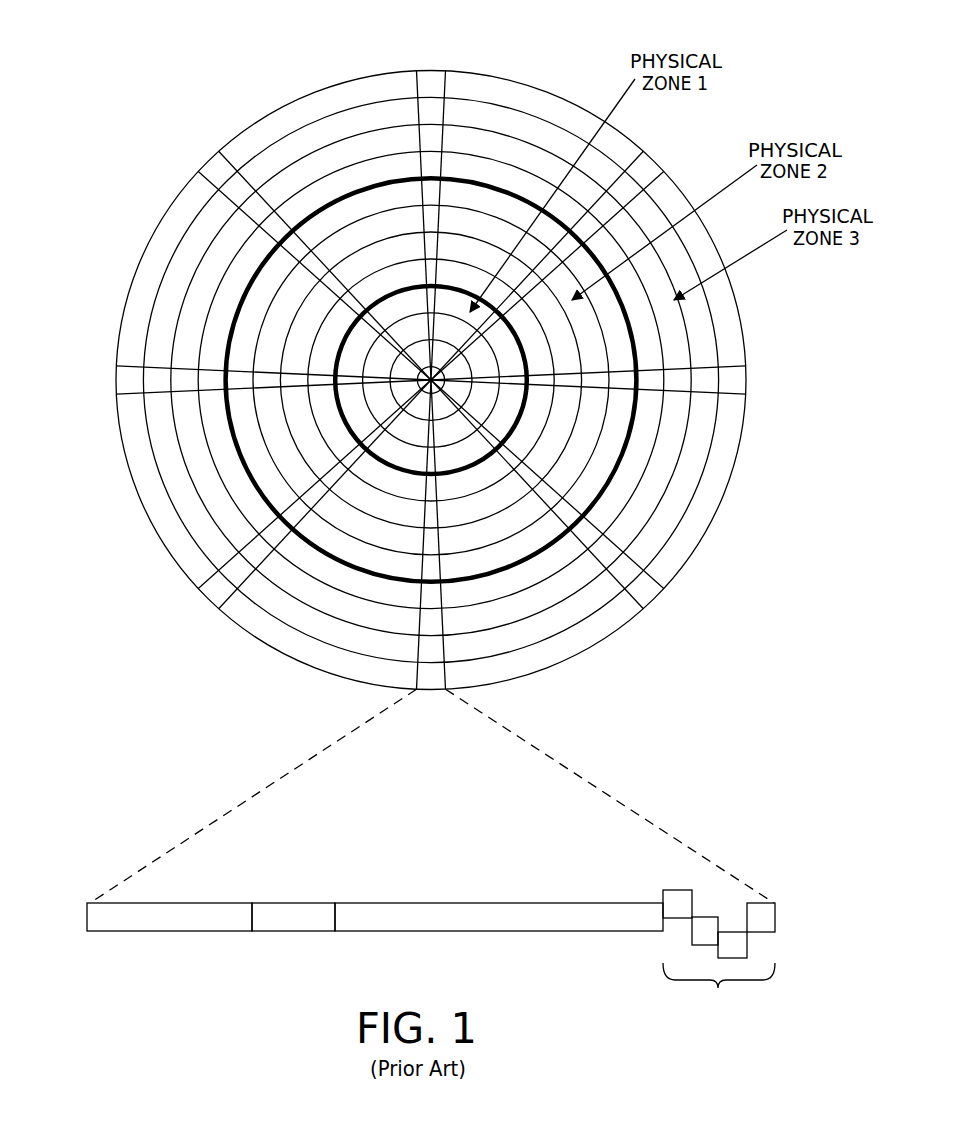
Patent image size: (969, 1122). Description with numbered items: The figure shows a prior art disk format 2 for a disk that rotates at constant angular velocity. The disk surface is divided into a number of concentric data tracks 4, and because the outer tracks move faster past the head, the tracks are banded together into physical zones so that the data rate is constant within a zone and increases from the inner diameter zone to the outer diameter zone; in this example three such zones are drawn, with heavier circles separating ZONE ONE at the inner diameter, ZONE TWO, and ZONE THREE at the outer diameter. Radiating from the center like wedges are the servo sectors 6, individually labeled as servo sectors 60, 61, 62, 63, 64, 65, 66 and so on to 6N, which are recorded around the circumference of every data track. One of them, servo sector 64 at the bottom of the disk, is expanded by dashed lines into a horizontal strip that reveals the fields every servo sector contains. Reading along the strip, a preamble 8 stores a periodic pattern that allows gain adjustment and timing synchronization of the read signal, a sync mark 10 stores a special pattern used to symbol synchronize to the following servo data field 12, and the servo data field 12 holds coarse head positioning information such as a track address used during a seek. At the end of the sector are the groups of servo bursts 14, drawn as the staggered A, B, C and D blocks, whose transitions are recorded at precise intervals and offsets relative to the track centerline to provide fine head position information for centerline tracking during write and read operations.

The disk format 2 is at (196, 74).
The data tracks 4 is at (538, 133).
The servo sectors 6 is at (432, 389).
The servo sector 6_0 60 is at (430, 80).
The servo sector 6_1 61 is at (647, 168).
The servo sector 6_2 62 is at (738, 382).
The servo sector 6_3 63 is at (647, 590).
The servo sector 6_4 64 is at (290, 760).
The servo sector 6_5 65 is at (213, 593).
The servo sector 6_6 66 is at (122, 380).
The servo sector 6_N 6N is at (215, 168).
The preamble 8 is at (152, 931).
The sync mark 10 is at (290, 931).
The servo data field 12 is at (487, 931).
The servo bursts 14 is at (648, 871).